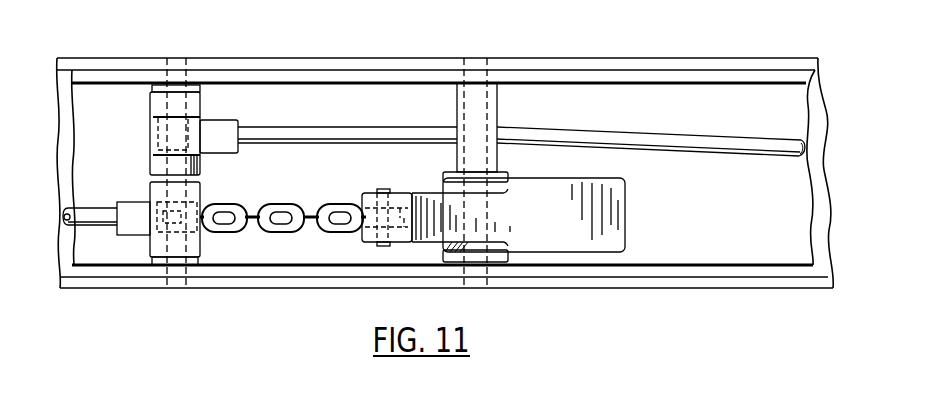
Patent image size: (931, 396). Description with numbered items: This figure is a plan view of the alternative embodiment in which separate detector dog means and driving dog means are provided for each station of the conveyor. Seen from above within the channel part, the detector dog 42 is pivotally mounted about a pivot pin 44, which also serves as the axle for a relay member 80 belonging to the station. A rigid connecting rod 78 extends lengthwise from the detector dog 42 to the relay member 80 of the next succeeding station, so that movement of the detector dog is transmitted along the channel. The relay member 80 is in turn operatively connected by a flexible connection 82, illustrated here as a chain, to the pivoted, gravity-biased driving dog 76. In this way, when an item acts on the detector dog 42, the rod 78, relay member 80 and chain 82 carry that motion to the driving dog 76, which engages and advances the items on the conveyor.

The detector dog 42 is at (150, 130).
The pivot pin 44 is at (188, 74).
The driving dog means 76 is at (428, 200).
The rigid connecting rod 78 is at (321, 132).
The relay member 80 is at (131, 205).
The flexible connection 82 is at (290, 204).